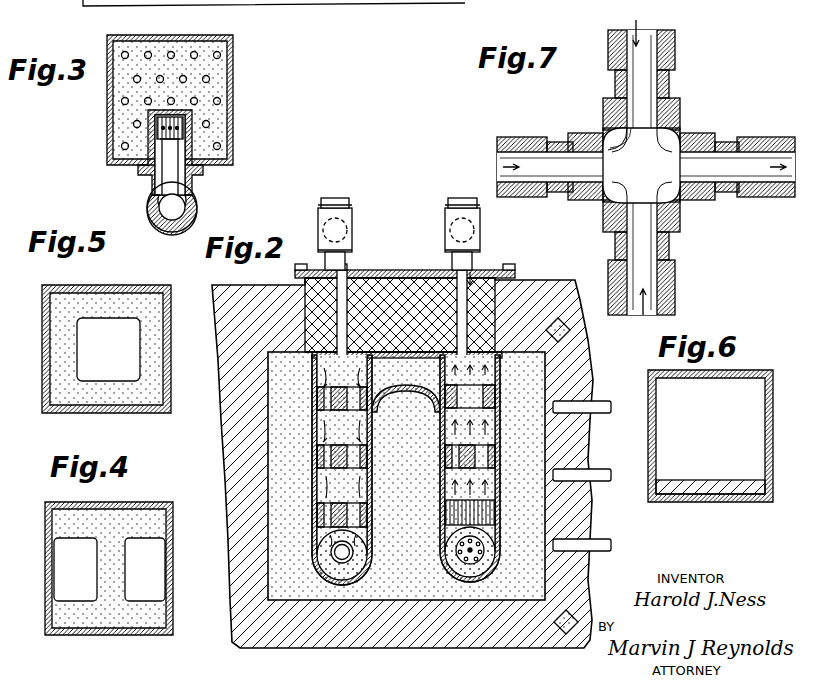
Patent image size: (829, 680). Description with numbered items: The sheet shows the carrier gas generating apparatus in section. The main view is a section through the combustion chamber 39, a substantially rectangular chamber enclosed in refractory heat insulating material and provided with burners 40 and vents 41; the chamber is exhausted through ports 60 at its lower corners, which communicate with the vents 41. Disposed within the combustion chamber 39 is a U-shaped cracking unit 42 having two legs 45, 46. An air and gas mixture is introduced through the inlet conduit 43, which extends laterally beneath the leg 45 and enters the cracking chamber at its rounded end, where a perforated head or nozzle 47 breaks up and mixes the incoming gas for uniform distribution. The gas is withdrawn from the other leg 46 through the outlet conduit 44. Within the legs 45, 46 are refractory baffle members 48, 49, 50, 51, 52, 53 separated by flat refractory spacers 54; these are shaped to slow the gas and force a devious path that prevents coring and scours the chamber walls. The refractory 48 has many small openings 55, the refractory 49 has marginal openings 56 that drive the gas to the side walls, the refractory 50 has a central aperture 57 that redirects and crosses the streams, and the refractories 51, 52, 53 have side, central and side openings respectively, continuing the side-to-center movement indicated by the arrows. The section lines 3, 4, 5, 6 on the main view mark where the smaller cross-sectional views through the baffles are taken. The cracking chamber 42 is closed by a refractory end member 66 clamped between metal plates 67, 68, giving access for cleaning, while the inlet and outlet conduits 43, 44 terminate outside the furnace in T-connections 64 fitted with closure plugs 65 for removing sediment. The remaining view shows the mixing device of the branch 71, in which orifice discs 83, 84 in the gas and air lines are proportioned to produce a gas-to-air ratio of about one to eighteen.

In FIG. 2, the section line 3- 3 is at (405, 552).
In FIG. 2, the section line 4- 4 is at (428, 462).
In FIG. 2, the section line 5- 5 is at (418, 410).
In FIG. 2, the section line 6- 6 is at (427, 430).
In FIG. 2, the combustion chamber 39 is at (270, 590).
In FIG. 2, the burners 40 is at (598, 401).
In FIG. 2, the vents 41 is at (556, 318).
In FIG. 5, the U-shaped cracking unit 42 is at (46, 345).
In FIG. 4, the U-shaped cracking unit 42 is at (170, 603).
In FIG. 2, the U-shaped cracking unit 42 is at (510, 389).
In FIG. 6, the U-shaped cracking unit 42 is at (650, 446).
In FIG. 3, the inlet conduit 43 is at (197, 197).
In FIG. 2, the inlet conduit 43 is at (472, 262).
In FIG. 2, the outlet conduit 44 is at (348, 270).
In FIG. 3, the leg 45 is at (235, 135).
In FIG. 2, the leg 45 is at (498, 528).
In FIG. 2, the leg 46 is at (317, 495).
In FIG. 3, the perforated head or nozzle 47 is at (200, 118).
In FIG. 2, the perforated head or nozzle 47 is at (448, 547).
In FIG. 3, the refractory baffle member 48 is at (220, 68).
In FIG. 2, the refractory baffle member 48 is at (445, 522).
In FIG. 4, the refractory baffle member 49 is at (152, 522).
In FIG. 2, the refractory baffle member 49 is at (440, 464).
In FIG. 5, the refractory baffle member 50 is at (126, 394).
In FIG. 2, the refractory baffle member 50 is at (440, 400).
In FIG. 2, the refractory baffle member 51 is at (317, 407).
In FIG. 2, the refractory baffle member 52 is at (317, 457).
In FIG. 2, the refractory baffle member 53 is at (317, 519).
In FIG. 2, the flat refractory spacers 54 is at (445, 500).
In FIG. 6, the flat refractory spacers 54 is at (726, 492).
In FIG. 3, the small openings 55 is at (217, 50).
In FIG. 2, the small openings 55 is at (498, 508).
In FIG. 4, the marginal openings 56 is at (158, 563).
In FIG. 5, the central aperture 57 is at (127, 354).
In FIG. 2, the exhaust ports 60 is at (546, 333).
In FIG. 2, the T-connections 64 is at (445, 220).
In FIG. 2, the closure plugs 65 is at (326, 203).
In FIG. 2, the refractory end member 66 is at (412, 285).
In FIG. 2, the metal plate 67 is at (388, 366).
In FIG. 2, the metal plate 68 is at (396, 265).
In FIG. 7, the branch 71 is at (672, 300).
In FIG. 7, the orifice disc 83 is at (651, 174).
In FIG. 7, the orifice disc 84 is at (647, 132).